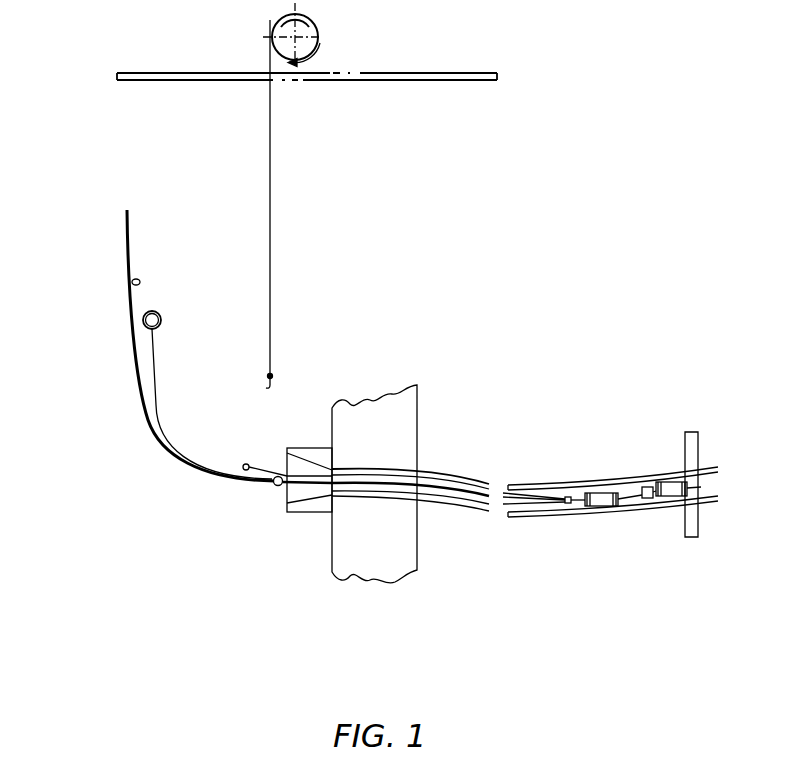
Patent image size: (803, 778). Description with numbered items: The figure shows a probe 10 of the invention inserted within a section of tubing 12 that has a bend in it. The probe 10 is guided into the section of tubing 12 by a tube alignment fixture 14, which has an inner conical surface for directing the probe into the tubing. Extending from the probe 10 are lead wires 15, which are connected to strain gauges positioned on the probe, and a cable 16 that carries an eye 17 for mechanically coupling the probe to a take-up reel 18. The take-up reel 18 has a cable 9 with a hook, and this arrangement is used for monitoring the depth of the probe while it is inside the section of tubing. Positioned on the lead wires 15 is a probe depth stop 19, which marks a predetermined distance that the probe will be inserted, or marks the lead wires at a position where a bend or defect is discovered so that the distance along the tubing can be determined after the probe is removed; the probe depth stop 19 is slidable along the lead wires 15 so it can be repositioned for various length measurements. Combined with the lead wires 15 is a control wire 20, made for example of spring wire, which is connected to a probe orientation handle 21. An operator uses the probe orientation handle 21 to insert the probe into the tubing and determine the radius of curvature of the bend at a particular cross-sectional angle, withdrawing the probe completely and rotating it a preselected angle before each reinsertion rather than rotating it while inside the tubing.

The cable 9 is at (271, 190).
The probe 10 is at (610, 517).
The section of tubing 12 is at (568, 513).
The tube alignment fixture 14 is at (292, 513).
The lead wires 15 is at (138, 377).
The cable 16 is at (285, 470).
The eye 17 is at (243, 465).
The take-up reel 18 is at (317, 22).
The probe depth stop 19 is at (273, 484).
The control wire 20 is at (156, 363).
The probe orientation handle 21 is at (148, 312).